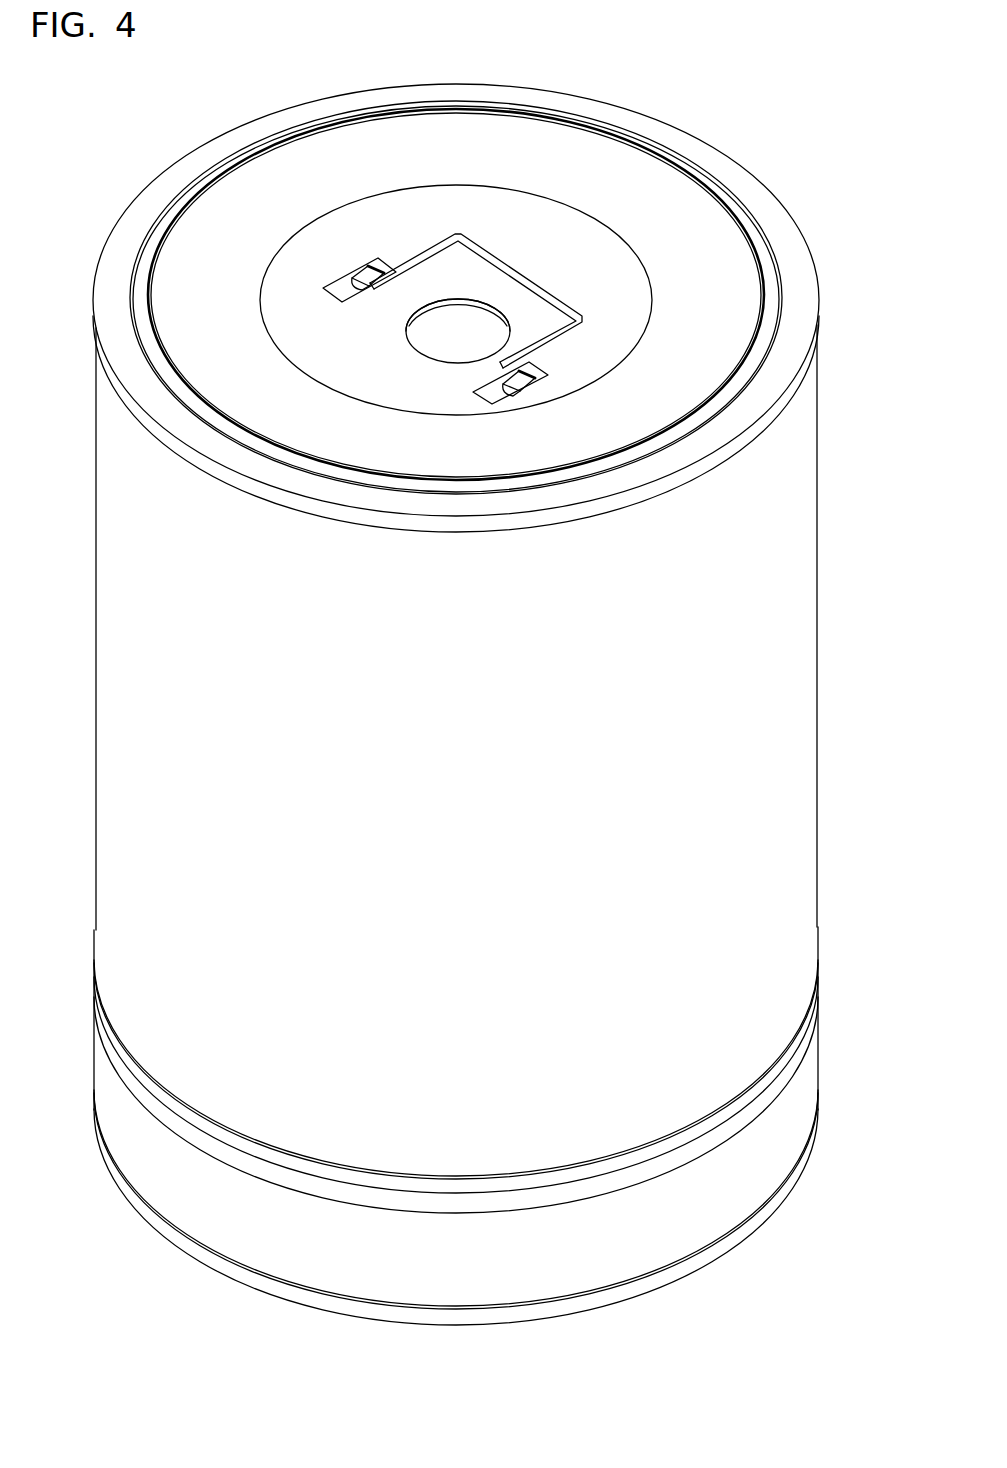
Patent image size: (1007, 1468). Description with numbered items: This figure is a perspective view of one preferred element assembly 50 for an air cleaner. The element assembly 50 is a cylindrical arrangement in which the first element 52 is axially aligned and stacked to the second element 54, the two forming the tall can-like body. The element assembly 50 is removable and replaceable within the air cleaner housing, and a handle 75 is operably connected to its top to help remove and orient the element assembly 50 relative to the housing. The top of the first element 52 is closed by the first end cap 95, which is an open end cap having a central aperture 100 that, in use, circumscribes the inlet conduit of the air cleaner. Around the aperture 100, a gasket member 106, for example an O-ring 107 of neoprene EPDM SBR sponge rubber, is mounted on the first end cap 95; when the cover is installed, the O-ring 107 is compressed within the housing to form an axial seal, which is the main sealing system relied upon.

The element assembly 50 is at (282, 91).
The first element 52 is at (818, 509).
The second element 54 is at (807, 1084).
The handle 75 is at (517, 281).
The first end cap 95 is at (492, 152).
The central aperture 100 is at (405, 328).
The gasket member 106 is at (768, 254).
The O-ring 107 is at (678, 157).